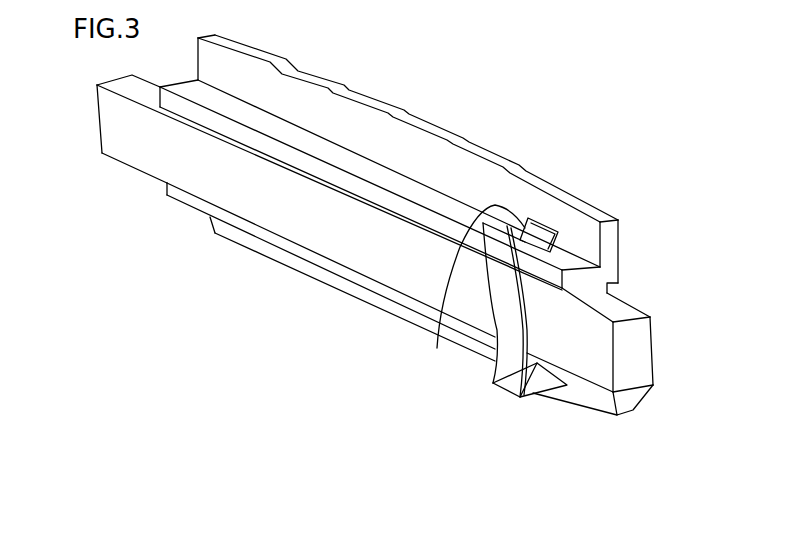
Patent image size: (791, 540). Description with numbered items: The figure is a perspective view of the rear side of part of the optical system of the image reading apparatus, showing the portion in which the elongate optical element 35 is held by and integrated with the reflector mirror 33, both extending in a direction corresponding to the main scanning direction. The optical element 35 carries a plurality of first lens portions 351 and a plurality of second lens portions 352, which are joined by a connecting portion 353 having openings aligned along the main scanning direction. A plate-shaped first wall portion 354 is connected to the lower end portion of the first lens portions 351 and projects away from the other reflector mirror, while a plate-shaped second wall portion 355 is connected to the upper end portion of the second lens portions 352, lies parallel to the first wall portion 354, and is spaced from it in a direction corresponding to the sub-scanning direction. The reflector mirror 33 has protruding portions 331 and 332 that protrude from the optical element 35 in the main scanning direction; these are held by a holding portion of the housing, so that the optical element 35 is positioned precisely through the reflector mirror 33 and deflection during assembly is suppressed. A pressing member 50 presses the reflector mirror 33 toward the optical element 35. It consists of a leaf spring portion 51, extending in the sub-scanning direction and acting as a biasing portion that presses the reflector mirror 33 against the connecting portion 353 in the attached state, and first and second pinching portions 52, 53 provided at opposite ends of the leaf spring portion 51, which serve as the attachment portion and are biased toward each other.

The reflector mirror 33 is at (410, 327).
The protruding portion 331 is at (587, 357).
The protruding portion 332 is at (130, 152).
The optical element 35 is at (435, 170).
The first lens portion 351 is at (587, 213).
The second lens portion 352 is at (597, 400).
The connecting portion 353 is at (608, 287).
The first wall portion 354 is at (297, 137).
The second wall portion 355 is at (257, 230).
The pressing member 50 is at (490, 342).
The leaf spring portion 51 is at (485, 350).
The first pinching portion 52 is at (437, 350).
The second pinching portion 53 is at (535, 331).